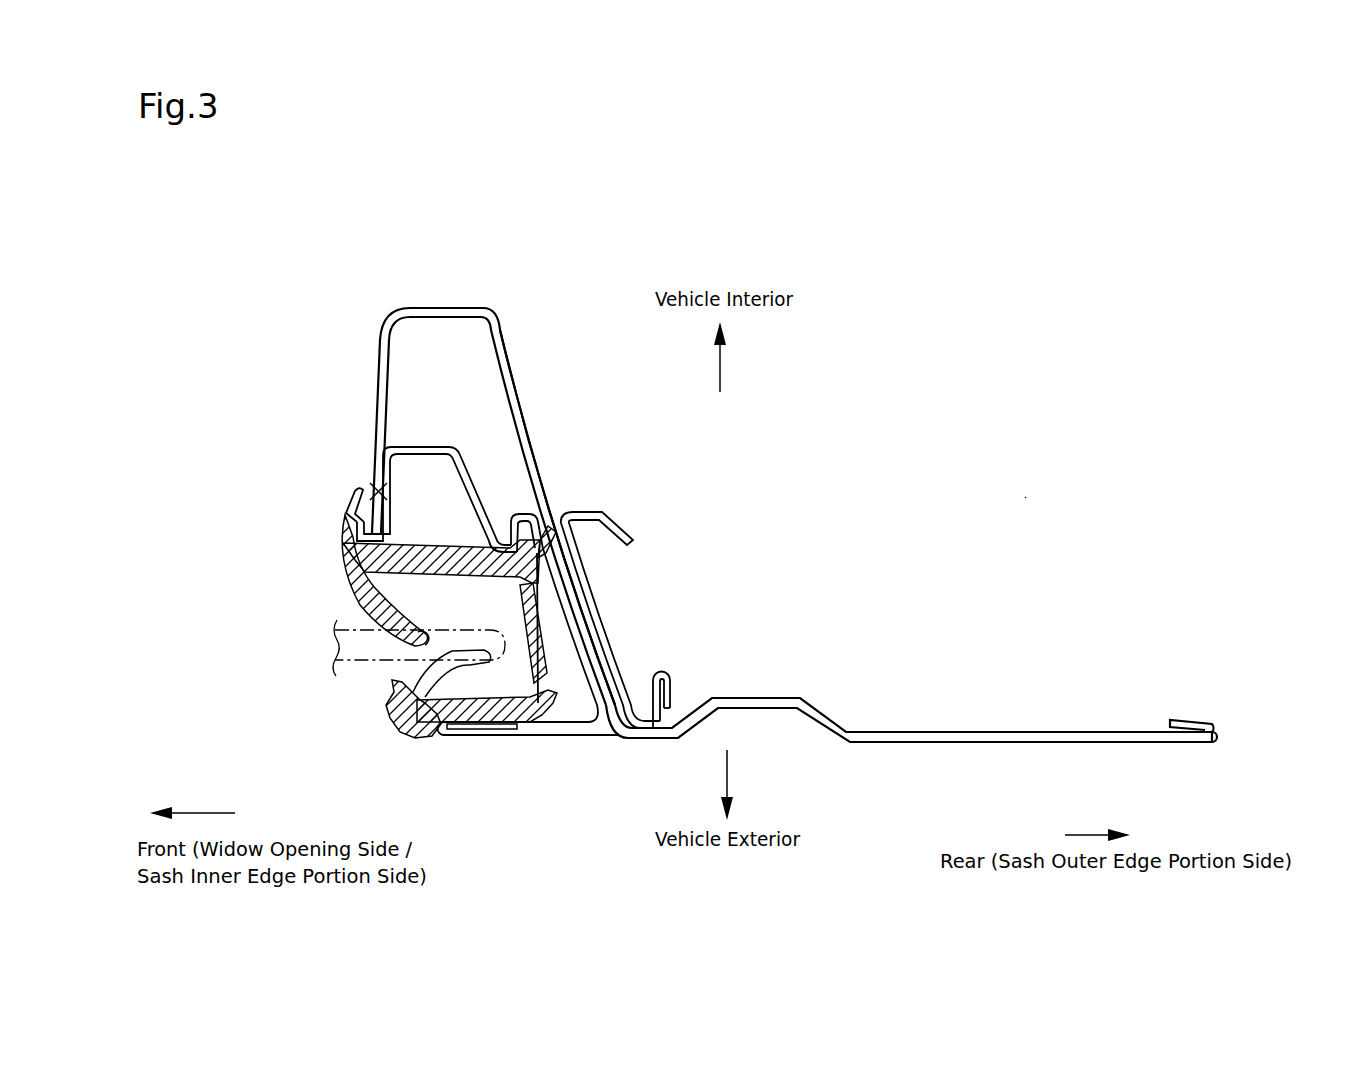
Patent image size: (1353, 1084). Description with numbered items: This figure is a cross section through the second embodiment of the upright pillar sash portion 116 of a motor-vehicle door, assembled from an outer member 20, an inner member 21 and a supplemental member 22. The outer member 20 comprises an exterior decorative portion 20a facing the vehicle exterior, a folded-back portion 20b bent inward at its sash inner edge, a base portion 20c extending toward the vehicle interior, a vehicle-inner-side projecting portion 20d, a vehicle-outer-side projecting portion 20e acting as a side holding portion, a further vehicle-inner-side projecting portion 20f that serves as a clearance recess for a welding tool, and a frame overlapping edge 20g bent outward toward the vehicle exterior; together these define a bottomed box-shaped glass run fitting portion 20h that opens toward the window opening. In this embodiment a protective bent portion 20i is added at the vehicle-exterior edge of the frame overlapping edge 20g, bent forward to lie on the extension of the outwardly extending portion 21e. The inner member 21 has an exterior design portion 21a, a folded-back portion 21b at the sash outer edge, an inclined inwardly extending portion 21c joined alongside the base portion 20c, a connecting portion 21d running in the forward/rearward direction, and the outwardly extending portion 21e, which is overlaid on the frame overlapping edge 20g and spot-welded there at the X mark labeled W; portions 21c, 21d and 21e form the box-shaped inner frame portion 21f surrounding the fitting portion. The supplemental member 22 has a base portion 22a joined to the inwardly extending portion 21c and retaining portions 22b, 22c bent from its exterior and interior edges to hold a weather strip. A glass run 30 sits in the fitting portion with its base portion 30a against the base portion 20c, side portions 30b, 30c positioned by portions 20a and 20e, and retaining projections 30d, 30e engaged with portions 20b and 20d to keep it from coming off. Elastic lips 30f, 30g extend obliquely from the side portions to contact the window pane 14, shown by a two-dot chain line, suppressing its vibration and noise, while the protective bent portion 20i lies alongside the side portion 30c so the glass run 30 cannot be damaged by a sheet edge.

The window pane 14 is at (357, 655).
The outer member 20 is at (470, 599).
The exterior decorative portion 20a is at (497, 736).
The folded-back portion 20b is at (470, 723).
The base portion 20c is at (568, 633).
The vehicle-inner-side projecting portion 20d is at (520, 516).
The vehicle-outer-side projecting portion 20e is at (523, 568).
The vehicle-inner-side projecting portion 20f is at (426, 447).
The frame overlapping edge 20g is at (396, 480).
The glass run fitting portion 20h is at (408, 613).
The protective bent portion 20i is at (351, 519).
The inner member 21 is at (750, 521).
The exterior design portion 21a is at (893, 742).
The folded-back portion 21b is at (1196, 727).
The inwardly extending portion 21c is at (530, 413).
The connecting portion 21d is at (436, 308).
The outwardly extending portion 21e is at (372, 417).
The inner frame portion 21f is at (515, 331).
The supplemental member 22 is at (644, 613).
The base portion 22a is at (592, 597).
The retaining portion 22b is at (663, 684).
The retaining portion 22c is at (638, 540).
The glass run 30 is at (487, 648).
The base portion 30a is at (540, 596).
The side portion 30b is at (452, 731).
The side portion 30c is at (441, 556).
The retaining projection 30d is at (525, 723).
The retaining projection 30e is at (551, 530).
The elastic lip 30f is at (470, 667).
The elastic lip 30g is at (425, 638).
The upright pillar sash portion 116 is at (1094, 468).
The spot-welded part W is at (372, 485).